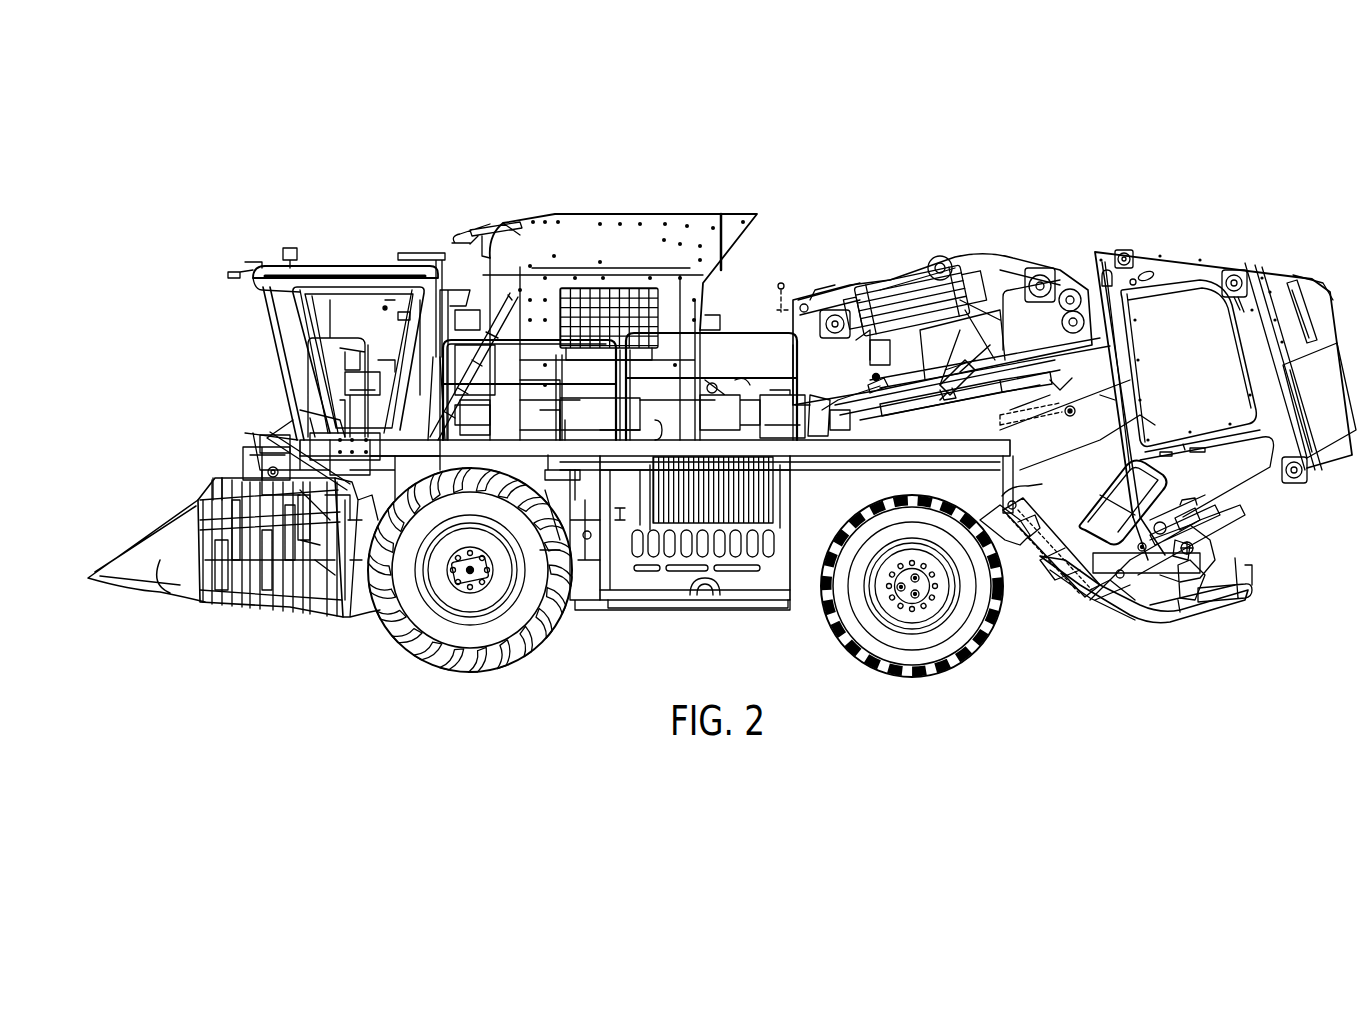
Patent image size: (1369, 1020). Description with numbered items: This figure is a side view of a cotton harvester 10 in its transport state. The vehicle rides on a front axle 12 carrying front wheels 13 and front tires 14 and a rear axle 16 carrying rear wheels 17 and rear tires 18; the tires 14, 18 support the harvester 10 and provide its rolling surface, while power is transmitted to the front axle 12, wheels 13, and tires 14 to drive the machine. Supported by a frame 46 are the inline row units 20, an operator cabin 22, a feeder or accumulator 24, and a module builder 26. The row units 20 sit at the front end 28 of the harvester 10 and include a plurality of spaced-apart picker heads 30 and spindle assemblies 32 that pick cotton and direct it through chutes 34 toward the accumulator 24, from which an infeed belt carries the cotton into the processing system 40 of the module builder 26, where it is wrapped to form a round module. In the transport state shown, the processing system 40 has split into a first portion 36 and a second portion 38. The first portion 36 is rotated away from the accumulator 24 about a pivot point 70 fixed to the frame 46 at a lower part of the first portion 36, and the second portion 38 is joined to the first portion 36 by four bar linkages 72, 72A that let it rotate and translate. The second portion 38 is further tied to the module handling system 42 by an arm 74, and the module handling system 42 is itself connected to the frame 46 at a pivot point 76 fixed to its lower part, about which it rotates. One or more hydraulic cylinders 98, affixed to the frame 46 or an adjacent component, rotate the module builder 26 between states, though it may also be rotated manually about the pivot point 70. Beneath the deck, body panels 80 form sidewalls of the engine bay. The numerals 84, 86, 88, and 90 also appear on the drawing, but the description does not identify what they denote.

The cotton harvester 10 is at (250, 182).
The front axle 12 is at (480, 584).
The front wheels 13 is at (470, 620).
The front tires 14 is at (428, 648).
The rear axle 16 is at (932, 578).
The rear wheels 17 is at (912, 624).
The rear tires 18 is at (862, 637).
The inline row units 20 is at (230, 650).
The operator cabin 22 is at (366, 277).
The accumulator 24 is at (702, 222).
The module builder 26 is at (1058, 242).
The front end 28 is at (74, 545).
The picker heads 30 is at (208, 600).
The spindle assemblies 32 is at (290, 610).
The chutes 34 is at (481, 304).
The first portion 36 is at (1010, 268).
The second portion 38 is at (1224, 363).
The processing system 40 is at (1026, 250).
The module handling system 42 is at (1135, 625).
The frame 46 is at (1012, 450).
The pivot point 70 is at (886, 380).
The four bar linkage 72 is at (1107, 442).
The four bar linkage 72A is at (1093, 305).
The arm 74 is at (1204, 560).
The pivot point 76 is at (1045, 555).
The body panels 80 is at (652, 572).
The hydraulic pump 84 is at (728, 380).
The sensor 86 is at (783, 282).
The controller 88 is at (806, 303).
The engine 90 is at (724, 412).
The hydraulic cylinder 98 is at (1043, 407).